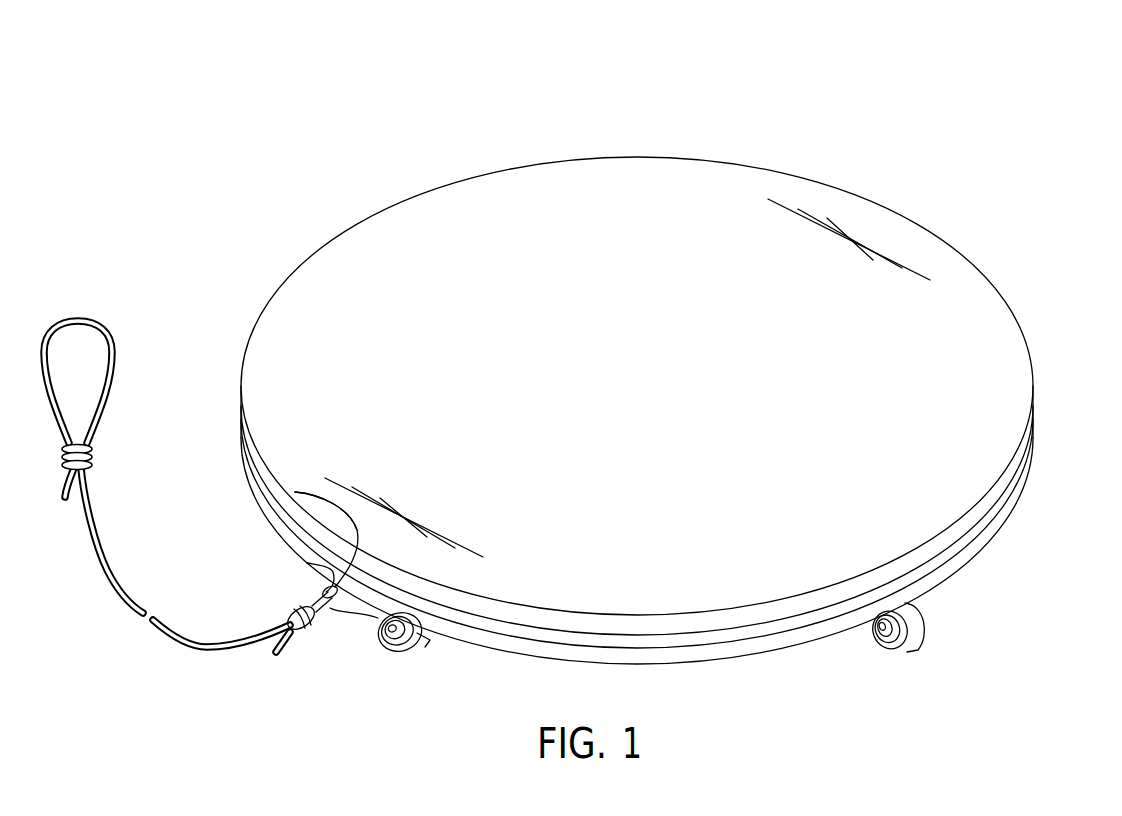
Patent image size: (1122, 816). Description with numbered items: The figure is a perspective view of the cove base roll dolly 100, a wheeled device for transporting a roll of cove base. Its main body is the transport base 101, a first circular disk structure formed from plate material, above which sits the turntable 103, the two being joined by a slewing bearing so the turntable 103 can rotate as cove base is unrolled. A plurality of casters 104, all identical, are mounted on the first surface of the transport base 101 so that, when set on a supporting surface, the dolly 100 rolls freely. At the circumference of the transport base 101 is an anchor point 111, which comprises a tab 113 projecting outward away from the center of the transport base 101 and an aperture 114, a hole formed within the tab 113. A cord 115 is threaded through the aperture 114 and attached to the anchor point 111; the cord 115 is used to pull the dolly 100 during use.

The cove base roll dolly 100 is at (206, 113).
The transport base 101 is at (720, 653).
The turntable 103 is at (990, 350).
The plurality of casters 104 is at (410, 655).
The anchor point 111 is at (342, 617).
The tab 113 is at (312, 588).
The aperture 114 is at (295, 492).
The cord 115 is at (200, 650).